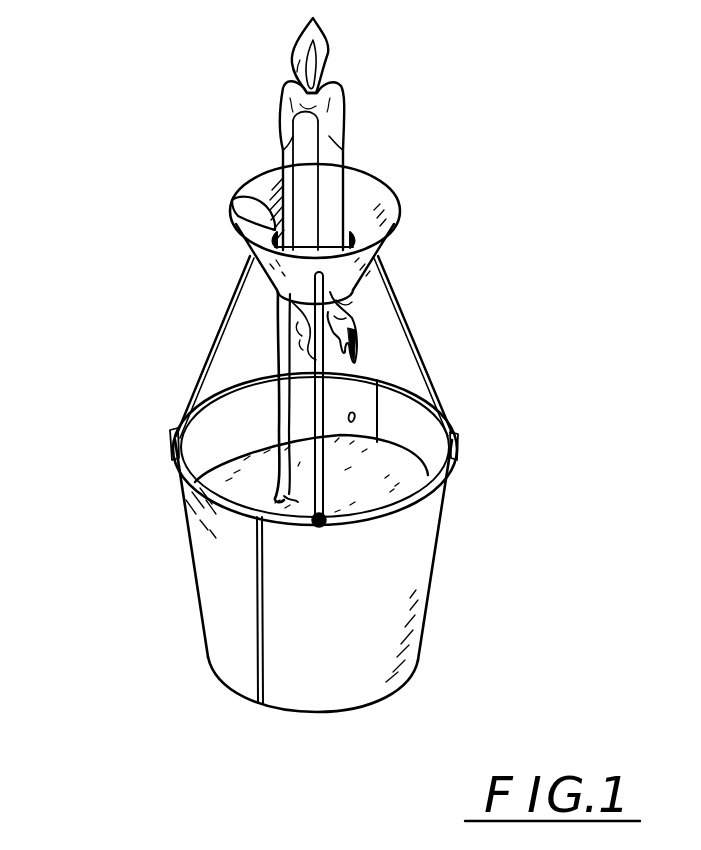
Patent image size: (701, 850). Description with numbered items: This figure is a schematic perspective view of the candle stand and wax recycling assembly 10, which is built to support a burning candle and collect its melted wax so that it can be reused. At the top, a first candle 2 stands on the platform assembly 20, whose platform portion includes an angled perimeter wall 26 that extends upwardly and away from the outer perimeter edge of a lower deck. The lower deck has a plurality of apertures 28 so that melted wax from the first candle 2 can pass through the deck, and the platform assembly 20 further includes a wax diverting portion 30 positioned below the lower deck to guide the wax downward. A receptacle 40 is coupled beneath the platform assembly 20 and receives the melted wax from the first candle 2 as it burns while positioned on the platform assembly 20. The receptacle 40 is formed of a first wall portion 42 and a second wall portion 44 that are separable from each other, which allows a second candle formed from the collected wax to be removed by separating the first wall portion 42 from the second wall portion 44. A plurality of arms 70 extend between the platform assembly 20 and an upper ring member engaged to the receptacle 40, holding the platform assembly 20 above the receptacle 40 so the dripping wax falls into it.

The candle stand and wax recycling assembly 10 is at (133, 257).
The first candle 2 is at (345, 125).
The platform assembly 20 is at (480, 202).
The angled perimeter wall 26 is at (375, 175).
The apertures 28 is at (232, 201).
The wax diverting portion 30 is at (277, 317).
The arms 70 is at (428, 377).
The receptacle 40 is at (440, 545).
The first wall portion 42 is at (417, 648).
The second wall portion 44 is at (212, 597).